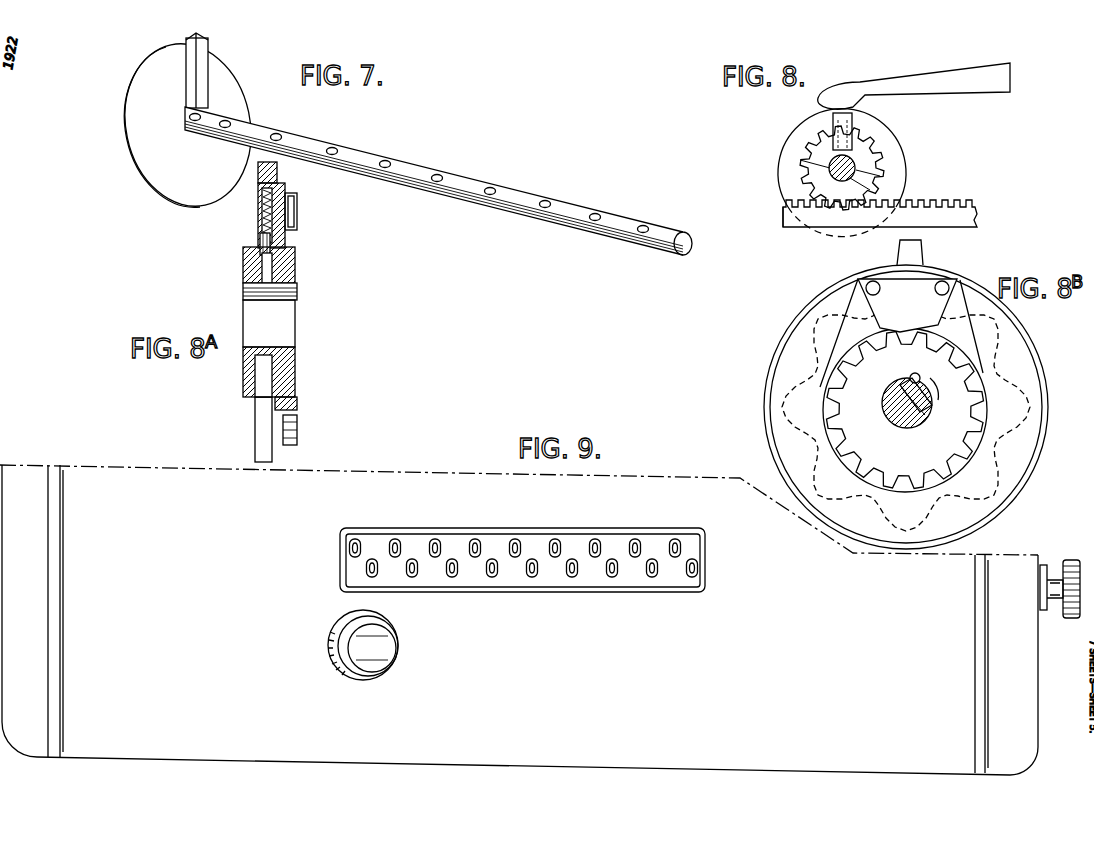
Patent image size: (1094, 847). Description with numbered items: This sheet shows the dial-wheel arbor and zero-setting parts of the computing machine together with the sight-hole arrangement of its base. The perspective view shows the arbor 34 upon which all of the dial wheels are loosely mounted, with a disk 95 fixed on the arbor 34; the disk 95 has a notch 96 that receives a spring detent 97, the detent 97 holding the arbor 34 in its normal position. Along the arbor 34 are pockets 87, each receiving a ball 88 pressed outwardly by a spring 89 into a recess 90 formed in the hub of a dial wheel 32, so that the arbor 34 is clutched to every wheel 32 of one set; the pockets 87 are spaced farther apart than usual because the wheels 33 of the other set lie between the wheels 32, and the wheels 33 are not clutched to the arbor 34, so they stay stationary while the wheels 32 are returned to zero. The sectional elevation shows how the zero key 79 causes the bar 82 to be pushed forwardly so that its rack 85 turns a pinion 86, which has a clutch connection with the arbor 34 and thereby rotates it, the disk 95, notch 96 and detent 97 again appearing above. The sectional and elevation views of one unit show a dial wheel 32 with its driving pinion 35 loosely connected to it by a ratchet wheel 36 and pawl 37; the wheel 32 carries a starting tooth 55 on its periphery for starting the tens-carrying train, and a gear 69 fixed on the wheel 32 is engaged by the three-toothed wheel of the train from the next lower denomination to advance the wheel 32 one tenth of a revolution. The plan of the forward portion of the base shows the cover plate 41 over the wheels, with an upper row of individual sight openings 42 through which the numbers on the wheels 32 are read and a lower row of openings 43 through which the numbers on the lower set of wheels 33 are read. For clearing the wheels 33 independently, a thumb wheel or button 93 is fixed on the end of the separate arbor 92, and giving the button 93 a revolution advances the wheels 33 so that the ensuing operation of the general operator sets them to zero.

In FIG. 8B, the dial or computing wheel 32 is at (764, 387).
In FIG. 9, the dial or computing wheel 32 is at (596, 542).
In FIG. 9, the dial or computing wheel 33 is at (652, 578).
In FIG. 7, the arbor 34 is at (566, 220).
In FIG. 8, the arbor 34 is at (840, 182).
In FIG. 8B, the arbor 34 is at (882, 404).
In FIG. 8A, the pinion 35 is at (243, 266).
In FIG. 8B, the pinion 35 is at (905, 410).
In FIG. 8A, the ratchet wheel 36 is at (243, 372).
In FIG. 8B, the ratchet wheel 36 is at (873, 312).
In FIG. 8A, the pawl 37 is at (260, 240).
In FIG. 8B, the pawl 37 is at (945, 322).
In FIG. 9, the cover plate 41 is at (345, 566).
In FIG. 9, the upper row of sight openings 42 is at (400, 540).
In FIG. 9, the lower row of sight openings 43 is at (498, 585).
In FIG. 8A, the starting tooth 55 is at (278, 173).
In FIG. 8B, the starting tooth 55 is at (915, 256).
In FIG. 8A, the gear 69 is at (297, 208).
In FIG. 8B, the gear 69 is at (800, 322).
In FIG. 9, the zero key 79 is at (400, 626).
In FIG. 8, the bar 82 is at (955, 215).
In FIG. 8, the rack 85 is at (783, 200).
In FIG. 8, the pinion 86 is at (880, 152).
In FIG. 7, the pocket 87 is at (386, 162).
In FIG. 8, the pocket 87 is at (806, 164).
In FIG. 8B, the pocket 87 is at (933, 400).
In FIG. 8, the ball 88 is at (908, 168).
In FIG. 8B, the ball 88 is at (918, 373).
In FIG. 8, the spring 89 is at (873, 187).
In FIG. 8B, the spring 89 is at (924, 416).
In FIG. 8A, the recess 90 is at (296, 300).
In FIG. 8B, the recess 90 is at (932, 376).
In FIG. 9, the arbor 92 is at (1052, 580).
In FIG. 9, the thumb wheel or button 93 is at (1062, 608).
In FIG. 7, the disk 95 is at (155, 74).
In FIG. 8, the disk 95 is at (792, 132).
In FIG. 7, the notch 96 is at (206, 40).
In FIG. 8, the notch 96 is at (853, 125).
In FIG. 8, the spring detent 97 is at (946, 82).